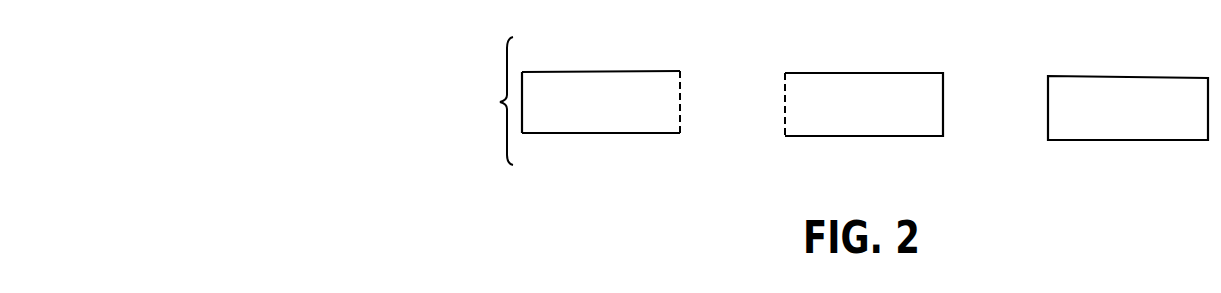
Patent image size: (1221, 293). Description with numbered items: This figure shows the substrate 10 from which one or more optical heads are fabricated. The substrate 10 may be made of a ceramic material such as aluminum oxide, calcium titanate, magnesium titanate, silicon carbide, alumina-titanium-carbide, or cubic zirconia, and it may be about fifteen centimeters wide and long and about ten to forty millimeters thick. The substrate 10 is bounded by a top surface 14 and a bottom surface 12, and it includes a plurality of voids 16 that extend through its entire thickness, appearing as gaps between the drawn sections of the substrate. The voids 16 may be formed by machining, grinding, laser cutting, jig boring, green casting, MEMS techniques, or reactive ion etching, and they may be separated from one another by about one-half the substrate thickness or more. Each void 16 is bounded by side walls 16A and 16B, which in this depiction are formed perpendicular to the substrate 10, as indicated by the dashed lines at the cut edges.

The substrate 10 is at (494, 101).
The bottom surface 12 is at (612, 133).
The top surface 14 is at (612, 72).
The voids 16 is at (990, 105).
The side wall 16A is at (680, 116).
The side wall 16B is at (785, 116).